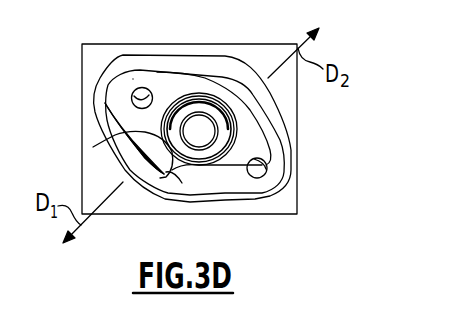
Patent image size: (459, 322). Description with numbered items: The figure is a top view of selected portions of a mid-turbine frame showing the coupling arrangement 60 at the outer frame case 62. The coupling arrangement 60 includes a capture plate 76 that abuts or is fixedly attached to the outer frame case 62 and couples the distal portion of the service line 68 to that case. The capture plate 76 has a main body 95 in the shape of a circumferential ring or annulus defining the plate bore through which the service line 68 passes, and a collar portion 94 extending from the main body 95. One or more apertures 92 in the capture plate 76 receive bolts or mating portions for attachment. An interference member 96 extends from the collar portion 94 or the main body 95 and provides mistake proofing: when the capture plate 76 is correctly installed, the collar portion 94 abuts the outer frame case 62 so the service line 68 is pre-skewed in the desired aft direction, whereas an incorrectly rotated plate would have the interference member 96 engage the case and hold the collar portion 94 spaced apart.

The coupling arrangement 60 is at (68, 72).
The outer frame case 62 is at (100, 164).
The service line 68 is at (234, 127).
The capture plate 76 is at (133, 79).
The apertures 92 is at (143, 97).
The collar portion 94 is at (125, 118).
The main body 95 is at (93, 147).
The interference member 96 is at (182, 183).